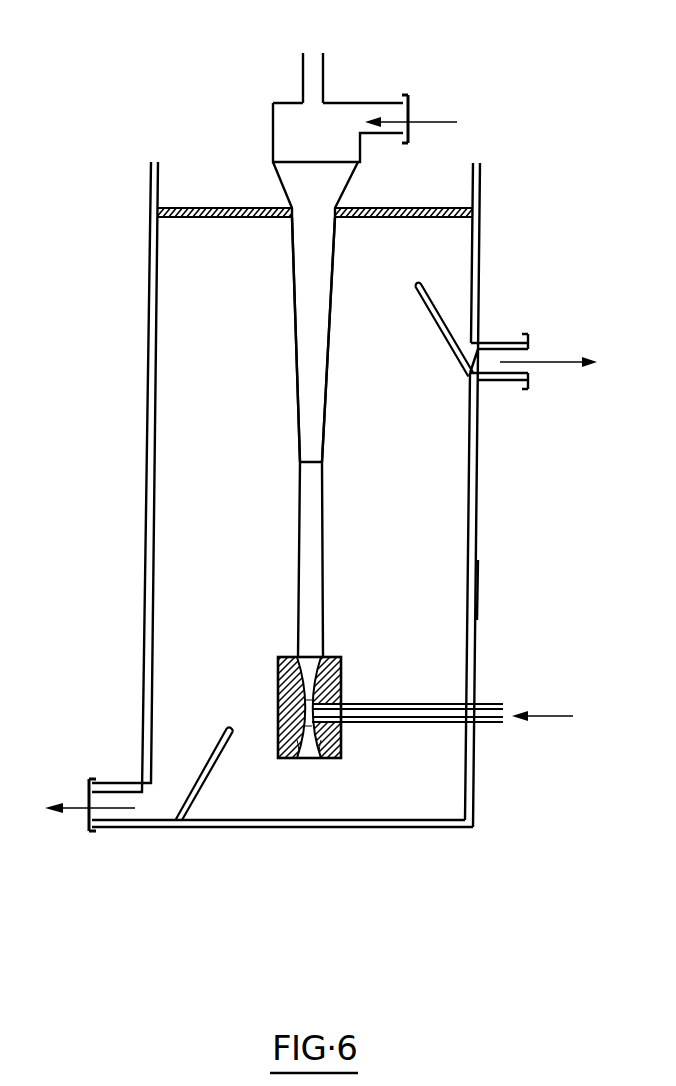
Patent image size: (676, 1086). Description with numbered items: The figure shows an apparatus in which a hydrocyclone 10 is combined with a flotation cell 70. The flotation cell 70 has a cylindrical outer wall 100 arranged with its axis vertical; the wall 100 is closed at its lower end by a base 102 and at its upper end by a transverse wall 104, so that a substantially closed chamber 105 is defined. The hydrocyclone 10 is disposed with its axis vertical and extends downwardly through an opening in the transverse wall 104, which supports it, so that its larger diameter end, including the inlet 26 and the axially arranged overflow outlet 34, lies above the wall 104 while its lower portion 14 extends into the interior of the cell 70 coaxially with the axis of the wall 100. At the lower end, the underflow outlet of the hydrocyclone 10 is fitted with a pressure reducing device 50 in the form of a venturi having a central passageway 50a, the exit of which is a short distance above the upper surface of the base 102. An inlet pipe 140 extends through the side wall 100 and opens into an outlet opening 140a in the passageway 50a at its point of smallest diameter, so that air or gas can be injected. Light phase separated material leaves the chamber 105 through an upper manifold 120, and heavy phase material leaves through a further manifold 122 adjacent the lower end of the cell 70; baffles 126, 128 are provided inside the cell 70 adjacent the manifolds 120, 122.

The hydrocyclone 10 is at (327, 413).
The portion of the hydrocyclone 14 is at (330, 322).
The inlet 26 is at (393, 134).
The overflow outlet 34 is at (302, 79).
The pressure reducing device 50 is at (343, 664).
The central passageway 50a is at (293, 758).
The flotation cell 70 is at (477, 590).
The cylindrical outer wall 100 is at (478, 480).
The base 102 is at (397, 828).
The transverse wall 104 is at (418, 208).
The chamber 105 is at (425, 562).
The upper manifold 120 is at (497, 341).
The further manifold 122 is at (120, 828).
The baffle 126 is at (433, 292).
The baffle 128 is at (197, 773).
The inlet pipe 140 is at (418, 702).
The outlet opening 140a is at (308, 713).